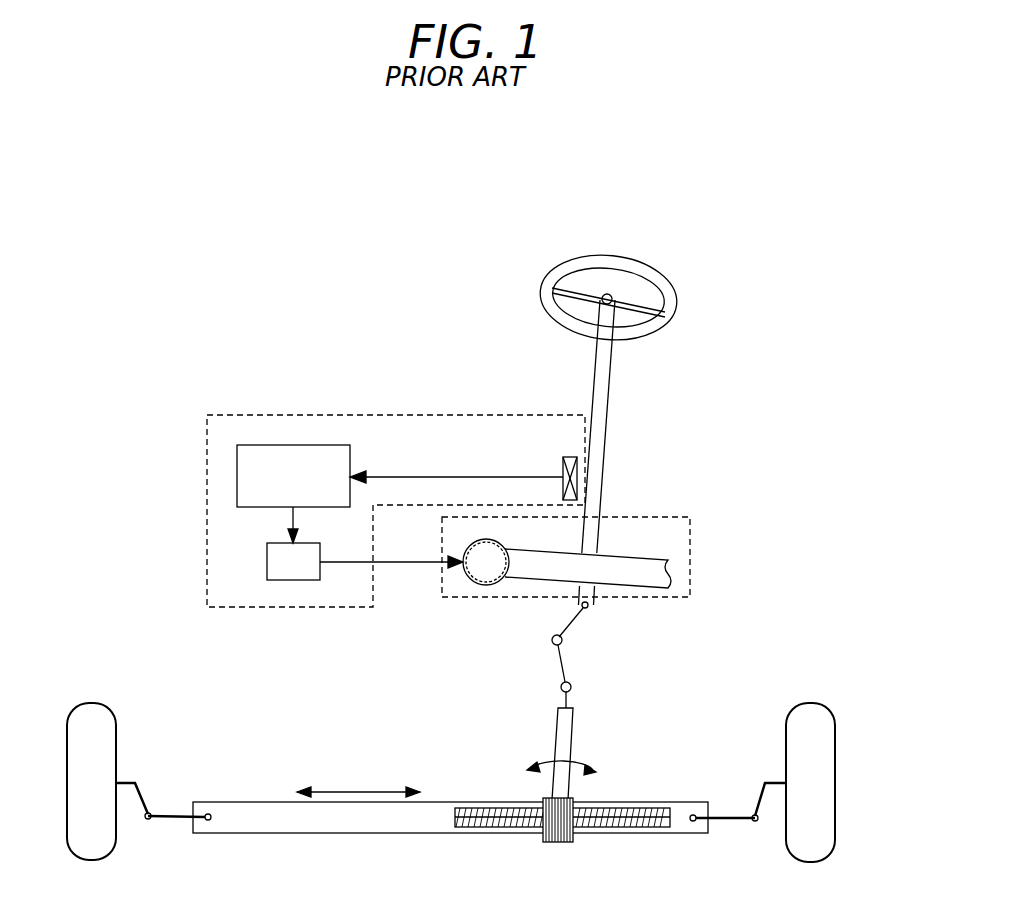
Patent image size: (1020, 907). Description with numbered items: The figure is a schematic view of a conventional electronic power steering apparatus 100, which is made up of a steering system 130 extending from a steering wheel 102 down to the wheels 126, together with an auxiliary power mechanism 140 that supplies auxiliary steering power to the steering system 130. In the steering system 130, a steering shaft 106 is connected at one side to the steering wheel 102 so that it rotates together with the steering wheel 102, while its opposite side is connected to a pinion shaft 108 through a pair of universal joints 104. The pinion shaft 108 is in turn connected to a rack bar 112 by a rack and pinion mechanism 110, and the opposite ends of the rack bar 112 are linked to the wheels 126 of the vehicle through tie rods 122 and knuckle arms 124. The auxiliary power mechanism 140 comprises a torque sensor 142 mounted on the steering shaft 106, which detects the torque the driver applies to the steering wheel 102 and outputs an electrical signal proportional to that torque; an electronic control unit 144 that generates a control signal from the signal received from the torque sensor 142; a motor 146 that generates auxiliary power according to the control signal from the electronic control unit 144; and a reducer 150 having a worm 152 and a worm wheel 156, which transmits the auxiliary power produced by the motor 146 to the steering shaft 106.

The electronic power steering apparatus 100 is at (259, 195).
The steering wheel 102 is at (543, 290).
The universal joints 104 is at (574, 625).
The steering shaft 106 is at (605, 408).
The pinion shaft 108 is at (553, 740).
The rack and pinion mechanism 110 is at (603, 826).
The rack bar 112 is at (243, 810).
The tie rods 122 is at (735, 815).
The knuckle arms 124 is at (125, 782).
The wheels 126 is at (822, 713).
The steering system 130 is at (606, 392).
The auxiliary power mechanism 140 is at (207, 458).
The torque sensor 142 is at (562, 465).
The electronic control unit 144 is at (350, 457).
The motor 146 is at (267, 562).
The reducer 150 is at (692, 557).
The worm 152 is at (487, 572).
The worm wheel 156 is at (600, 555).